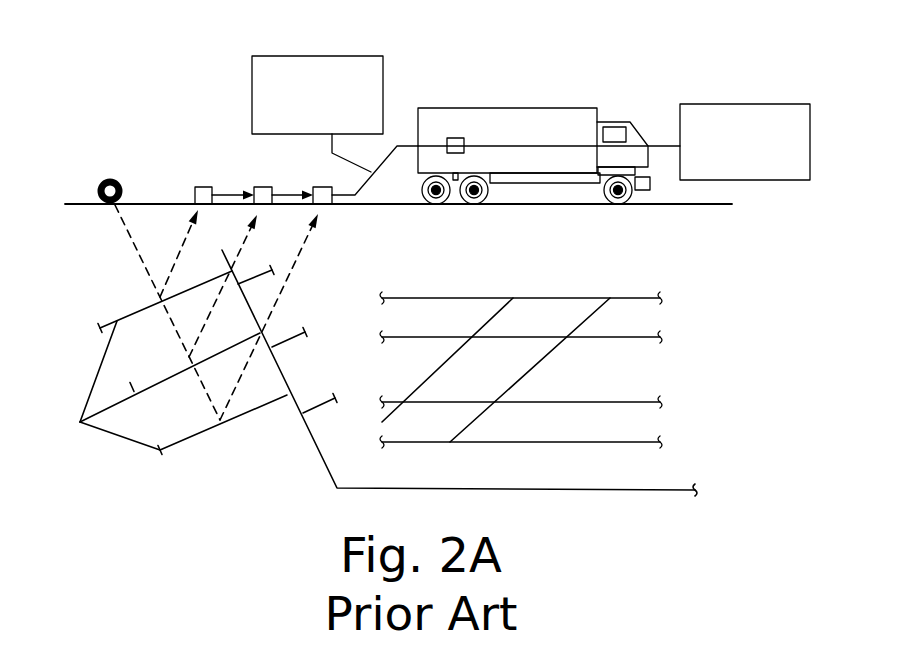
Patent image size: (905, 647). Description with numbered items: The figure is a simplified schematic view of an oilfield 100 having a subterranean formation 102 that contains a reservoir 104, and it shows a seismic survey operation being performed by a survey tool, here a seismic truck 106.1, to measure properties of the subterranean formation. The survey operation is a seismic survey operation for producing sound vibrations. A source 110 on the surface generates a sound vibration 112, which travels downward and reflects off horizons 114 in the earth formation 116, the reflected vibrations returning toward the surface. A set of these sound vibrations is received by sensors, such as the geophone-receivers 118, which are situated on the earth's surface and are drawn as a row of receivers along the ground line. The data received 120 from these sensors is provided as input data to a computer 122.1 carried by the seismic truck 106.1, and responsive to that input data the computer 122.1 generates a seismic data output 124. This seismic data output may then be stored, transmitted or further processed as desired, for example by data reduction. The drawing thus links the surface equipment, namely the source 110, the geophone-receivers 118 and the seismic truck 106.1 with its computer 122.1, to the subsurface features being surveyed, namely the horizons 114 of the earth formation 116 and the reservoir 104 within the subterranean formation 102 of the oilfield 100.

The oilfield 100 is at (714, 28).
The subterranean formation 102 is at (645, 270).
The reservoir 104 is at (633, 375).
The seismic truck 106.1 is at (560, 108).
The source 110 is at (107, 178).
The sound vibration 112 is at (152, 281).
The horizons 114 is at (80, 422).
The earth formation 116 is at (322, 455).
The geophone-receivers 118 is at (320, 187).
The data received 120 is at (300, 56).
The computer 122.1 is at (455, 138).
The seismic data output 124 is at (750, 104).